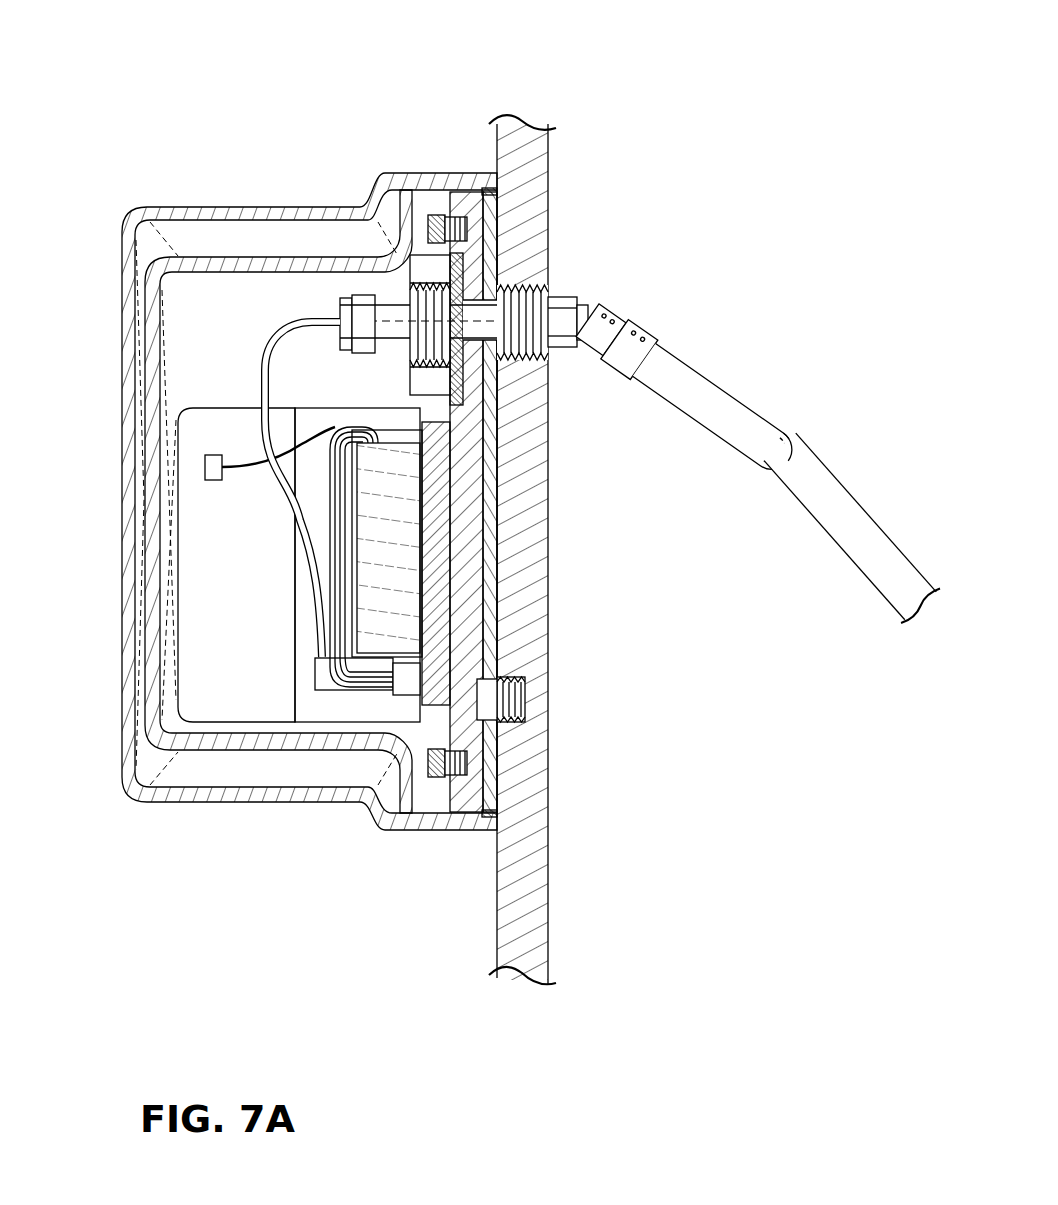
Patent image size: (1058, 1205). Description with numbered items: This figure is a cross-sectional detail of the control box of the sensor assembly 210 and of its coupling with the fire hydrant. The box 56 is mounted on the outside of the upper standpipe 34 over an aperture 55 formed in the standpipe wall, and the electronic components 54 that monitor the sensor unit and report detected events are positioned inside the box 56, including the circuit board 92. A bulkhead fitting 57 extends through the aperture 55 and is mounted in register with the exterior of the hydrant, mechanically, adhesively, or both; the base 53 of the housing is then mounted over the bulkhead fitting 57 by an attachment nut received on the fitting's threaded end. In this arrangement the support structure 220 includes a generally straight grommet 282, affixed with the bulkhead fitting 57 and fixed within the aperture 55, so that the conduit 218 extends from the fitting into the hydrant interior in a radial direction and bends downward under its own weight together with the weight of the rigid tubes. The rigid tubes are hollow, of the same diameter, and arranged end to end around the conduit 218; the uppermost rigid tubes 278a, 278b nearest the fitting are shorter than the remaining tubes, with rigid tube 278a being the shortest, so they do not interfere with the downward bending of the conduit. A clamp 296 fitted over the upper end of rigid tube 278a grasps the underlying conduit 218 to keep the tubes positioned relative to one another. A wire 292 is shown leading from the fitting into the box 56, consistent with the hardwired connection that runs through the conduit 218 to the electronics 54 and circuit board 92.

The upper standpipe 34 is at (533, 183).
The base 53 is at (483, 783).
The electronic components 54 is at (223, 570).
The aperture 55 is at (530, 362).
The box 56 is at (243, 793).
The bulkhead fitting 57 is at (520, 287).
The circuit board 92 is at (437, 677).
The sensor assembly 210 is at (760, 405).
The conduit 218 is at (808, 453).
The support structure 220 is at (836, 509).
The rigid tube 278a is at (680, 380).
The rigid tube 278b is at (853, 517).
The straight grommet 282 is at (552, 293).
The connector wire 292 is at (300, 318).
The clamp 296 is at (612, 297).